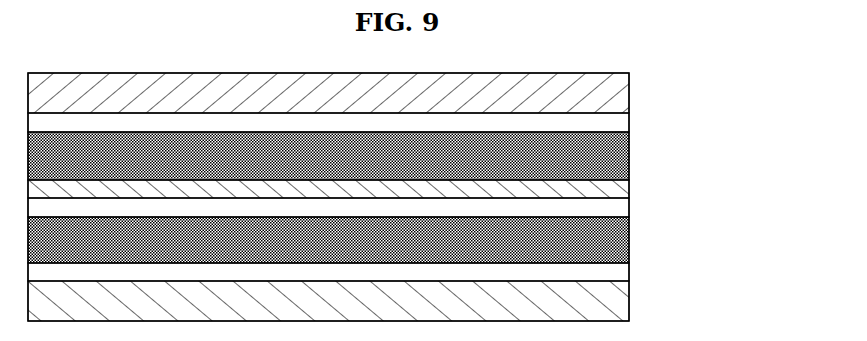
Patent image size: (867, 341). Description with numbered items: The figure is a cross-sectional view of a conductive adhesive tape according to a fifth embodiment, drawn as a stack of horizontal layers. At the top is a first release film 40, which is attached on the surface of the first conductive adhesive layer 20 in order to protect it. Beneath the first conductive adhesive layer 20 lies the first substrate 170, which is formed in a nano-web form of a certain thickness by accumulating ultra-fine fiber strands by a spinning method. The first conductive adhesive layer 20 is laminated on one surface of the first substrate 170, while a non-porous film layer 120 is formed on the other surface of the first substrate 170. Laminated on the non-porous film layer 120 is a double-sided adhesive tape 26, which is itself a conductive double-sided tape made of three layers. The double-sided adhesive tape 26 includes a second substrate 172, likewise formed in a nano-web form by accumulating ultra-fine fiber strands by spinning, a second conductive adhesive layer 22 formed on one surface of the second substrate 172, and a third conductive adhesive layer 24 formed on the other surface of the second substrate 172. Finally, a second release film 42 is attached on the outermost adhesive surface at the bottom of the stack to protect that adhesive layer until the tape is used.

The first release film 40 is at (618, 94).
The first conductive adhesive layer 20 is at (622, 125).
The first substrate 170 is at (620, 157).
The non-porous film layer 120 is at (620, 186).
The second conductive adhesive layer 22 is at (618, 210).
The second substrate 172 is at (624, 236).
The third conductive adhesive layer 24 is at (371, 274).
The double-sided adhesive tape 26 is at (396, 241).
The second release film 42 is at (620, 300).